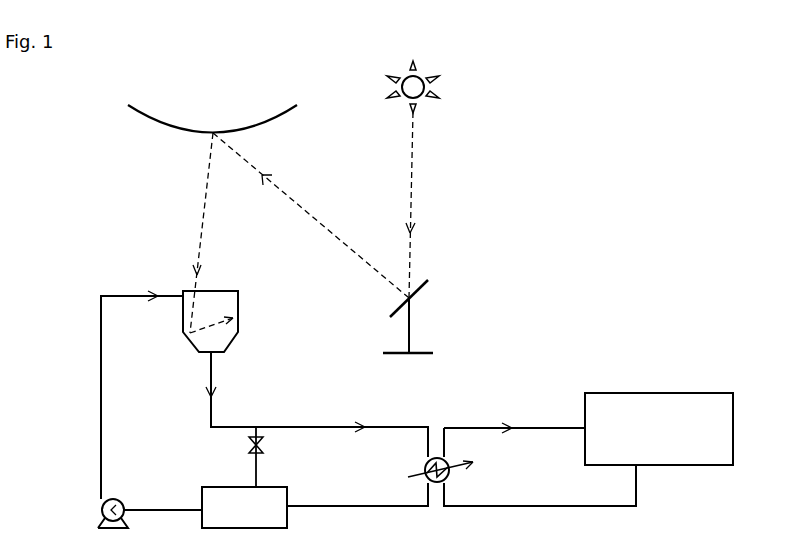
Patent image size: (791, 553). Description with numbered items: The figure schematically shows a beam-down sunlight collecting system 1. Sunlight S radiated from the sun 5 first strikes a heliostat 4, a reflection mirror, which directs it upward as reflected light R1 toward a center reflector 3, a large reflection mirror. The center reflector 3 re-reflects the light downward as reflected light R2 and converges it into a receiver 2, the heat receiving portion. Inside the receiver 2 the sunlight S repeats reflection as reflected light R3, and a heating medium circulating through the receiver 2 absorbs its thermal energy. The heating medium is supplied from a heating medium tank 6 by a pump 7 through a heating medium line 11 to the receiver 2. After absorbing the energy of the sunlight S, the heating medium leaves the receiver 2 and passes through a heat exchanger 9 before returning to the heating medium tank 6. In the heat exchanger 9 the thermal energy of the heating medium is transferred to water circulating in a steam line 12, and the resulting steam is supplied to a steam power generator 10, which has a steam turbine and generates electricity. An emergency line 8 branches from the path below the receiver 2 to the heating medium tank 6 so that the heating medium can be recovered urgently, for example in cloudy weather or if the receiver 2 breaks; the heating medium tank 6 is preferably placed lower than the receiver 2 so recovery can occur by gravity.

The beam-down sunlight collecting system 1 is at (618, 159).
The receiver 2 is at (240, 303).
The center reflector 3 is at (278, 120).
The heliostat 4 is at (411, 337).
The sun 5 is at (432, 88).
The heating medium tank 6 is at (227, 487).
The pump 7 is at (100, 521).
The emergency line 8 is at (258, 465).
The heat exchanger 9 is at (455, 480).
The steam power generator 10 is at (672, 393).
The heating medium line 11 is at (100, 387).
The steam line 12 is at (537, 507).
The reflected light R1 is at (297, 197).
The reflected light R2 is at (200, 210).
The reflected light R3 is at (207, 328).
The sunlight S is at (413, 195).